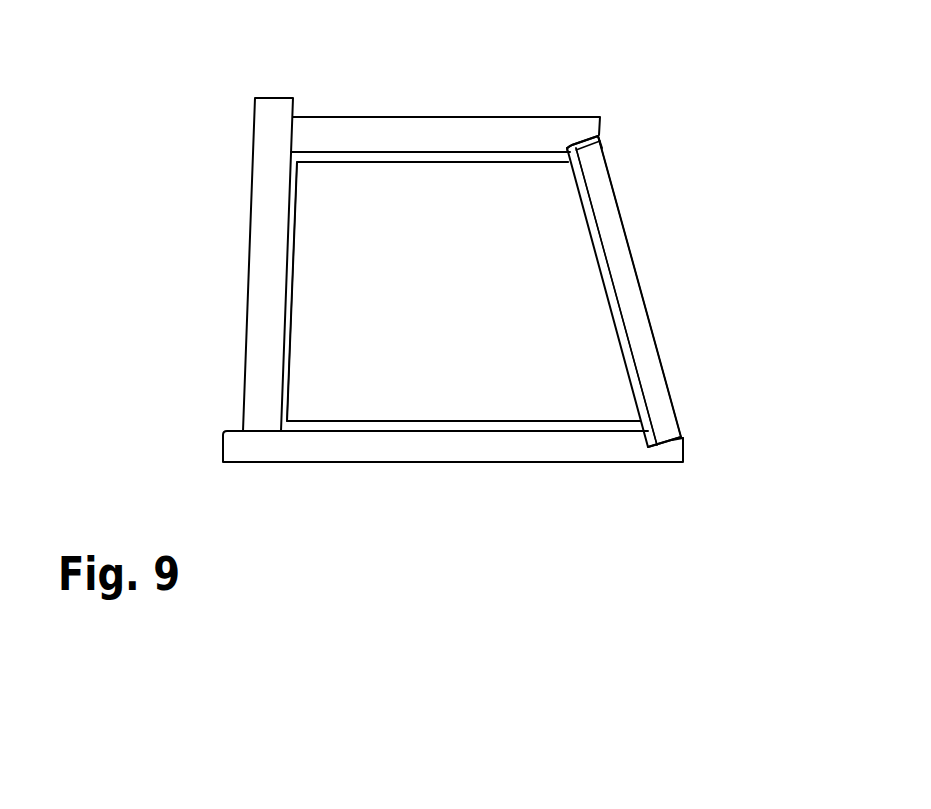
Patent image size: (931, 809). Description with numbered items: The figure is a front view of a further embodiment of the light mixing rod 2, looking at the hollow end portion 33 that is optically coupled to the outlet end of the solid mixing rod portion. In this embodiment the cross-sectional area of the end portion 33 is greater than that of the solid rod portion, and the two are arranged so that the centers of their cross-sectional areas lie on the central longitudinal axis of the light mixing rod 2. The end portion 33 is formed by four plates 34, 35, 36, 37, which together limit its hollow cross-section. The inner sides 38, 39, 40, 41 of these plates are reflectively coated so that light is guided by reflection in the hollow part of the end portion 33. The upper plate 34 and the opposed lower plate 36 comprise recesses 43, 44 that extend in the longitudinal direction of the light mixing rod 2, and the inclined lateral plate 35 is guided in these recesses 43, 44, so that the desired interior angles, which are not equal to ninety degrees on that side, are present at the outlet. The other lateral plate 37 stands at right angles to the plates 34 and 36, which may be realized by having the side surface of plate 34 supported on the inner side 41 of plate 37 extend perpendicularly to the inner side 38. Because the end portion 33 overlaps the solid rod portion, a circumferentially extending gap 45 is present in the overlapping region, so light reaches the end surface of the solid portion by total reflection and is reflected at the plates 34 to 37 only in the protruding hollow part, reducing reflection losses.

The light mixing rod 2 is at (226, 198).
The end portion 33 is at (327, 167).
The plate 34 is at (365, 113).
The plate 35 is at (640, 224).
The plate 36 is at (386, 472).
The plate 37 is at (240, 250).
The inner side 38 is at (369, 155).
The inner side 39 is at (600, 267).
The inner side 40 is at (422, 432).
The inner side 41 is at (285, 272).
The recess 43 is at (583, 142).
The recess 44 is at (668, 440).
The gap 45 is at (622, 355).